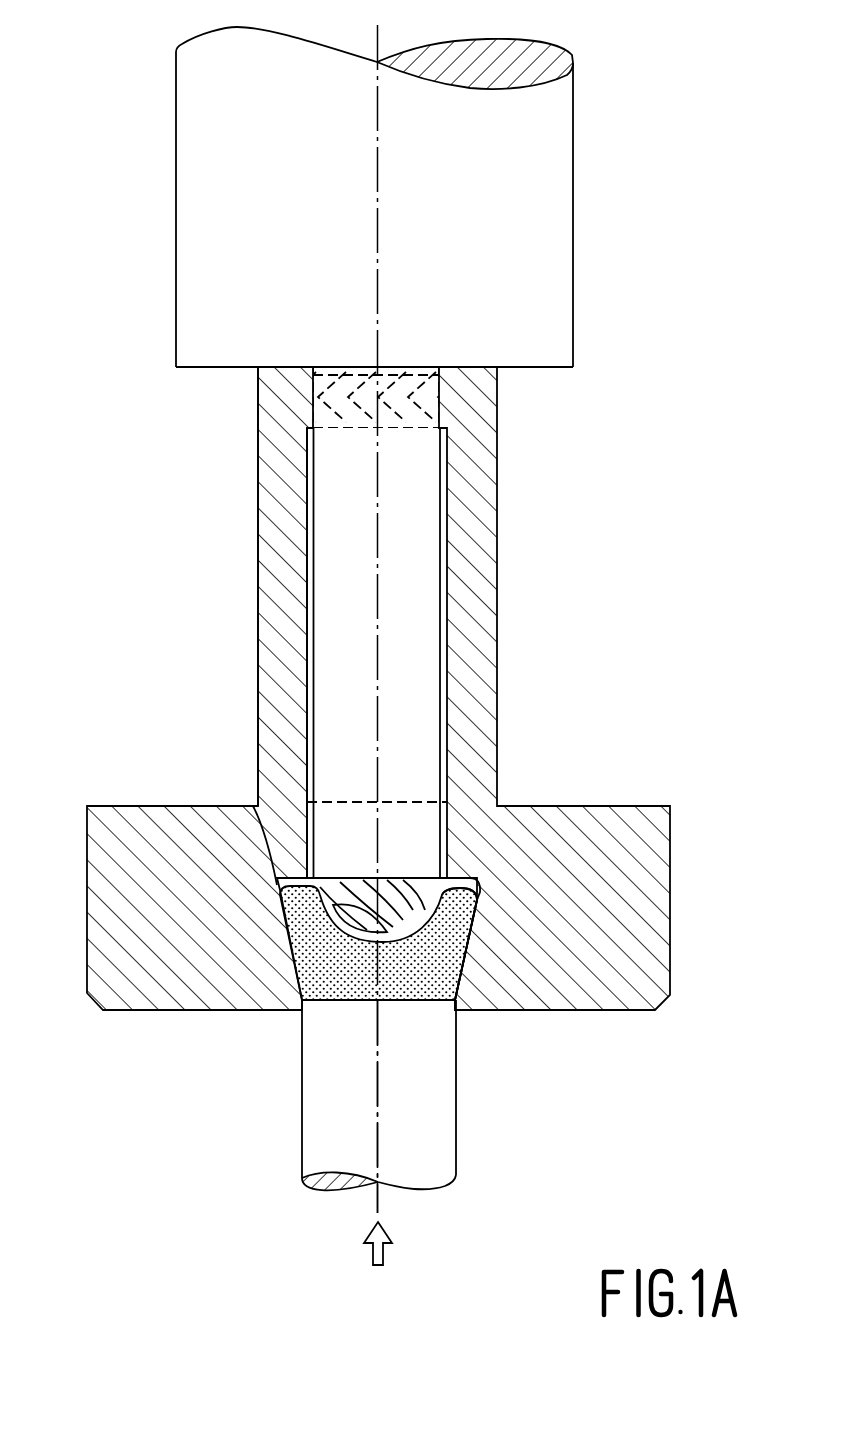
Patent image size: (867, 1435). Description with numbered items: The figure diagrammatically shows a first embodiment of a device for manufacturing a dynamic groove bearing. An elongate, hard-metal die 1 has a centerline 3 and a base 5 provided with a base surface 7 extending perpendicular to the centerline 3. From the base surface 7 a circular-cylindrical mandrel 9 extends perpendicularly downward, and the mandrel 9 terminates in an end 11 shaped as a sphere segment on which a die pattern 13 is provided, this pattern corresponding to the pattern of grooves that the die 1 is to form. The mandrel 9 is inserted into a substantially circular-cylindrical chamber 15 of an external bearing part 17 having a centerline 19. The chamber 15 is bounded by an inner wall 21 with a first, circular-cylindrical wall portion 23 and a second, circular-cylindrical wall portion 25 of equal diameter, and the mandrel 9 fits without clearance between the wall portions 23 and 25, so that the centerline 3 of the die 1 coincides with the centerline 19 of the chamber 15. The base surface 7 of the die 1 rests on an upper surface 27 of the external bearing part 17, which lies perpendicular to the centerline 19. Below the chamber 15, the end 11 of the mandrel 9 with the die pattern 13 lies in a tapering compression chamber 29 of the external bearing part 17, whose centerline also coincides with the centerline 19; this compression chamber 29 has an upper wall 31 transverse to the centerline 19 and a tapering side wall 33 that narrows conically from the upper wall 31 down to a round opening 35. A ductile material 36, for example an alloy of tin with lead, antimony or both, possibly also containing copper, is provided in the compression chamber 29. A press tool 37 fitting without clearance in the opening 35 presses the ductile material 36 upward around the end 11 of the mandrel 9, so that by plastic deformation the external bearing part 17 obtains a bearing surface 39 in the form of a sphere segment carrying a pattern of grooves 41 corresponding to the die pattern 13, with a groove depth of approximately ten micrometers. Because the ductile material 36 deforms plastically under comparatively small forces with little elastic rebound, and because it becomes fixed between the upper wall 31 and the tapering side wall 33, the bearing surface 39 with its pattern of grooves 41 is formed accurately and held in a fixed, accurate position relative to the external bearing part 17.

The die 1 is at (158, 350).
The centerline 3 is at (378, 50).
The base 5 is at (558, 316).
The base surface 7 is at (545, 367).
The mandrel 9 is at (417, 588).
The end 11 is at (446, 905).
The die pattern 13 is at (425, 885).
The chamber 15 is at (443, 660).
The external bearing part 17 is at (472, 718).
The centerline 19 is at (380, 1107).
The inner wall 21 is at (305, 582).
The first wall portion 23 is at (317, 396).
The second wall portion 25 is at (305, 808).
The upper surface 27 is at (470, 369).
The compression chamber 29 is at (287, 886).
The upper wall 31 is at (252, 805).
The tapering side wall 33 is at (283, 940).
The opening 35 is at (457, 1011).
The ductile material 36 is at (337, 980).
The press tool 37 is at (438, 1152).
The bearing surface 39 is at (503, 973).
The pattern of grooves 41 is at (503, 973).